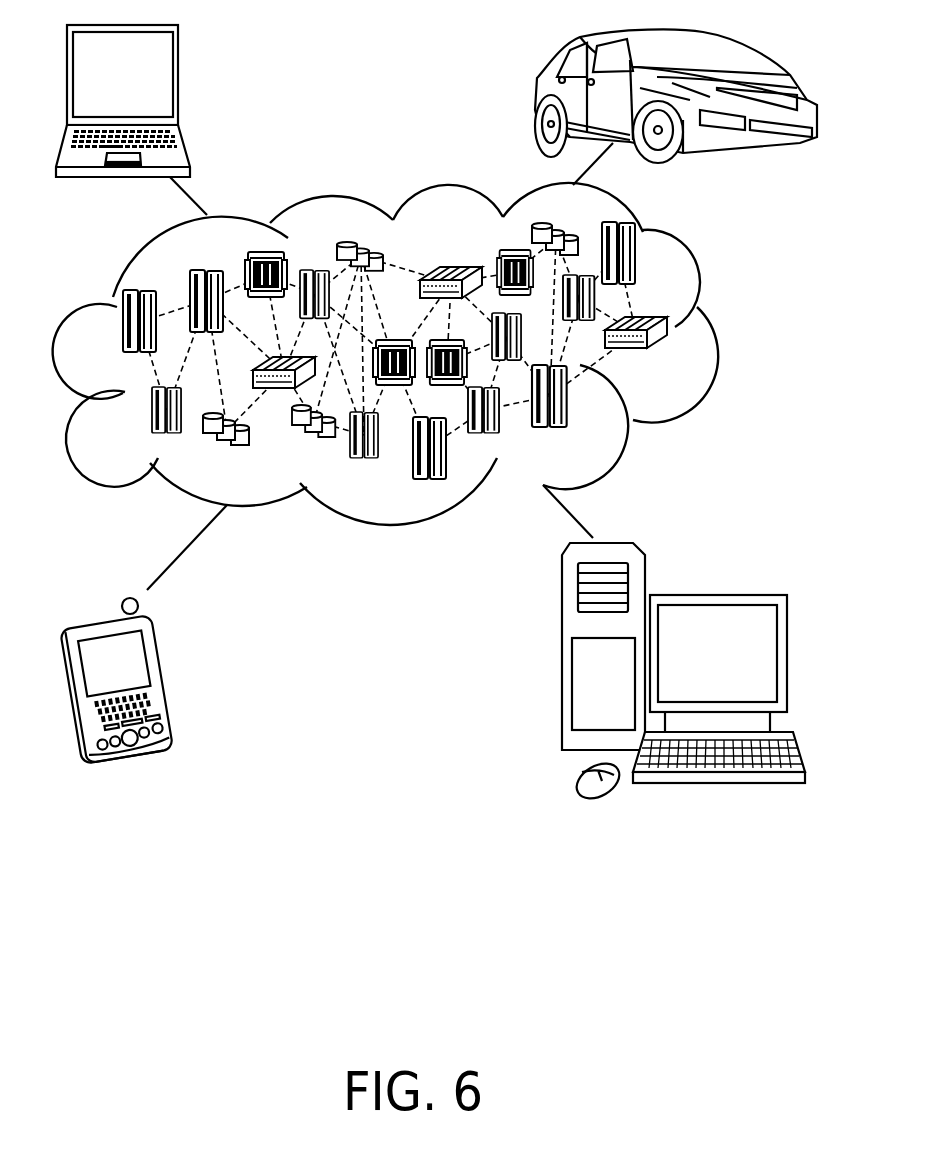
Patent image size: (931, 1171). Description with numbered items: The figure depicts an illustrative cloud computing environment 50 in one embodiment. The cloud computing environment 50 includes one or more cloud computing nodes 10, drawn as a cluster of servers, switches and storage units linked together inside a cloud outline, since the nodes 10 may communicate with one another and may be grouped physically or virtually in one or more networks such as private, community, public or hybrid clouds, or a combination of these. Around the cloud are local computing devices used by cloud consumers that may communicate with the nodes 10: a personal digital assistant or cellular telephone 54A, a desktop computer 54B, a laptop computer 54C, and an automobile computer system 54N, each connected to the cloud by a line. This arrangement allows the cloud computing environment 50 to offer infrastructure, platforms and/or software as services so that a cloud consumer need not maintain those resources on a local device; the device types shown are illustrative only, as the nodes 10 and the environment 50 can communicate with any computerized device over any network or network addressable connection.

The cloud computing node 10 is at (435, 415).
The cloud computing environment 50 is at (717, 333).
The personal digital assistant or cellular telephone 54A is at (170, 678).
The desktop computer 54B is at (714, 595).
The laptop computer 54C is at (178, 82).
The automobile computer system 54N is at (538, 96).